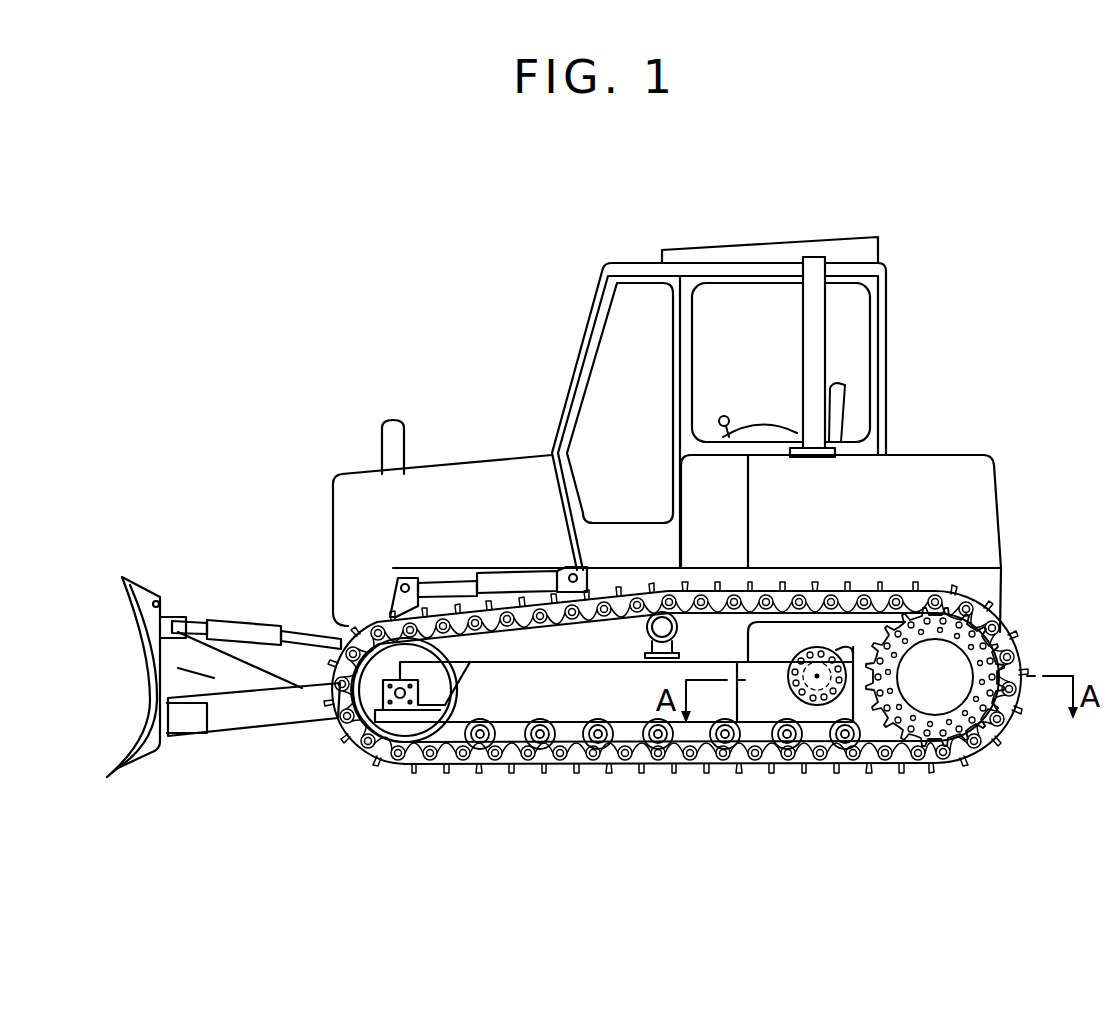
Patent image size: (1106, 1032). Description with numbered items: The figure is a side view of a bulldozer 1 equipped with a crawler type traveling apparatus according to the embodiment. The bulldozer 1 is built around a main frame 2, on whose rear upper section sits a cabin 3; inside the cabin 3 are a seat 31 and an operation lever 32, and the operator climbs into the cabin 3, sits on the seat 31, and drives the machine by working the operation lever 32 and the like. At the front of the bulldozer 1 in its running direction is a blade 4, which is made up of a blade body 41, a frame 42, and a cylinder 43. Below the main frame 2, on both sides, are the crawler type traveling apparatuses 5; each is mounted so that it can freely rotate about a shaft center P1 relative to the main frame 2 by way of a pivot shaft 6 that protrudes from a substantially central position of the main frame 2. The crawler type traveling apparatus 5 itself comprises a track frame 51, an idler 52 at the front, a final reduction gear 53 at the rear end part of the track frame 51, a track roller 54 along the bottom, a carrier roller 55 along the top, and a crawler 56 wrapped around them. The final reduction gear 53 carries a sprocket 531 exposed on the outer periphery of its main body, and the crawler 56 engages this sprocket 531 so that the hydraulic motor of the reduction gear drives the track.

The bulldozer 1 is at (446, 336).
The main frame 2 is at (724, 632).
The cabin 3 is at (880, 341).
The seat 31 is at (841, 384).
The operation lever 32 is at (724, 416).
The blade 4 is at (137, 598).
The blade body 41 is at (146, 712).
The frame 42 is at (237, 724).
The cylinder 43 is at (268, 637).
The crawler type traveling apparatus 5 is at (579, 792).
The track frame 51 is at (628, 703).
The idler 52 is at (344, 746).
The final reduction gear 53 is at (932, 695).
The sprocket 531 is at (879, 632).
The track roller 54 is at (518, 740).
The carrier roller 55 is at (578, 598).
The crawler 56 is at (545, 756).
The pivot shaft 6 is at (830, 772).
The shaft center P1 is at (806, 688).